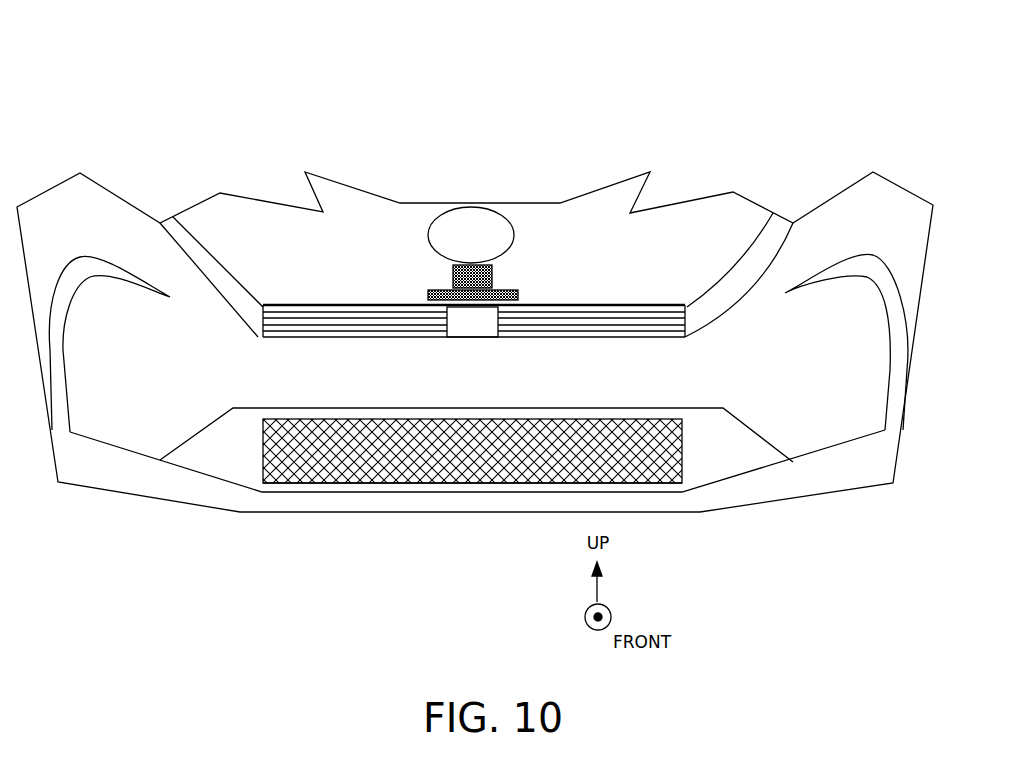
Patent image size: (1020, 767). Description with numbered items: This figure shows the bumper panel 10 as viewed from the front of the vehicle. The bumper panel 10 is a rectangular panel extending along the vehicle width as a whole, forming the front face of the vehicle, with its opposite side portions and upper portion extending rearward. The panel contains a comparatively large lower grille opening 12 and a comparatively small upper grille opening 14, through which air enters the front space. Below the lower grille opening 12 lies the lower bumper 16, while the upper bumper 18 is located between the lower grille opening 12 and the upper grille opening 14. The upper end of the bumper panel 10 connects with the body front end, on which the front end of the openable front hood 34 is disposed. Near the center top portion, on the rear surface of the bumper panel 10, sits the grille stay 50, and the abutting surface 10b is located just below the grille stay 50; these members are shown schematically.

The bumper panel 10 is at (332, 128).
The abutting surface 10b is at (427, 297).
The lower grille opening 12 is at (378, 502).
The upper grille opening 14 is at (392, 378).
The lower bumper 16 is at (342, 333).
The upper bumper 18 is at (620, 362).
The front hood 34 is at (467, 482).
The grille stay 50 is at (517, 261).